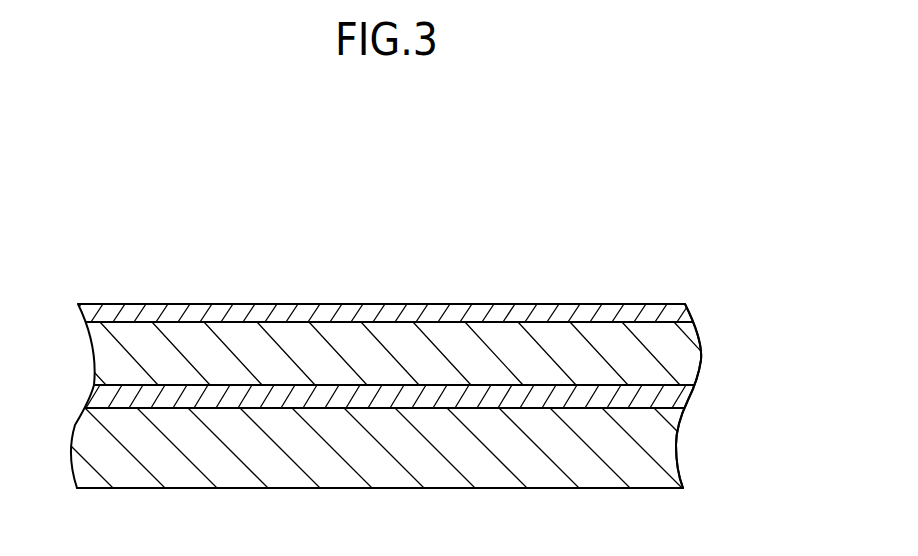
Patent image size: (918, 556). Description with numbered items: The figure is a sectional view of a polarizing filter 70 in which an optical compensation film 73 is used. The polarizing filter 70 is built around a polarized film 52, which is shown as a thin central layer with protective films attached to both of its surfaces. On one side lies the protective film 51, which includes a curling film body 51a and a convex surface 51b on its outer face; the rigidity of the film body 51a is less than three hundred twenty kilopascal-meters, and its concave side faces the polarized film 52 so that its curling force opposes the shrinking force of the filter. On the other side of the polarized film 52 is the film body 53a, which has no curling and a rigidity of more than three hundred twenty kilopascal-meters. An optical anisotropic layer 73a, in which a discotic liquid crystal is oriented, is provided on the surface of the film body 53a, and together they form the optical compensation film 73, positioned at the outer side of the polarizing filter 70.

The polarizing filter 70 is at (325, 235).
The optical compensation film 73 is at (416, 283).
The optical anisotropic layer 73a is at (642, 312).
The film body 53a is at (690, 352).
The polarized film 52 is at (696, 391).
The protective film 51 is at (409, 477).
The curling film body 51a is at (678, 463).
The convex surface 51b is at (497, 488).